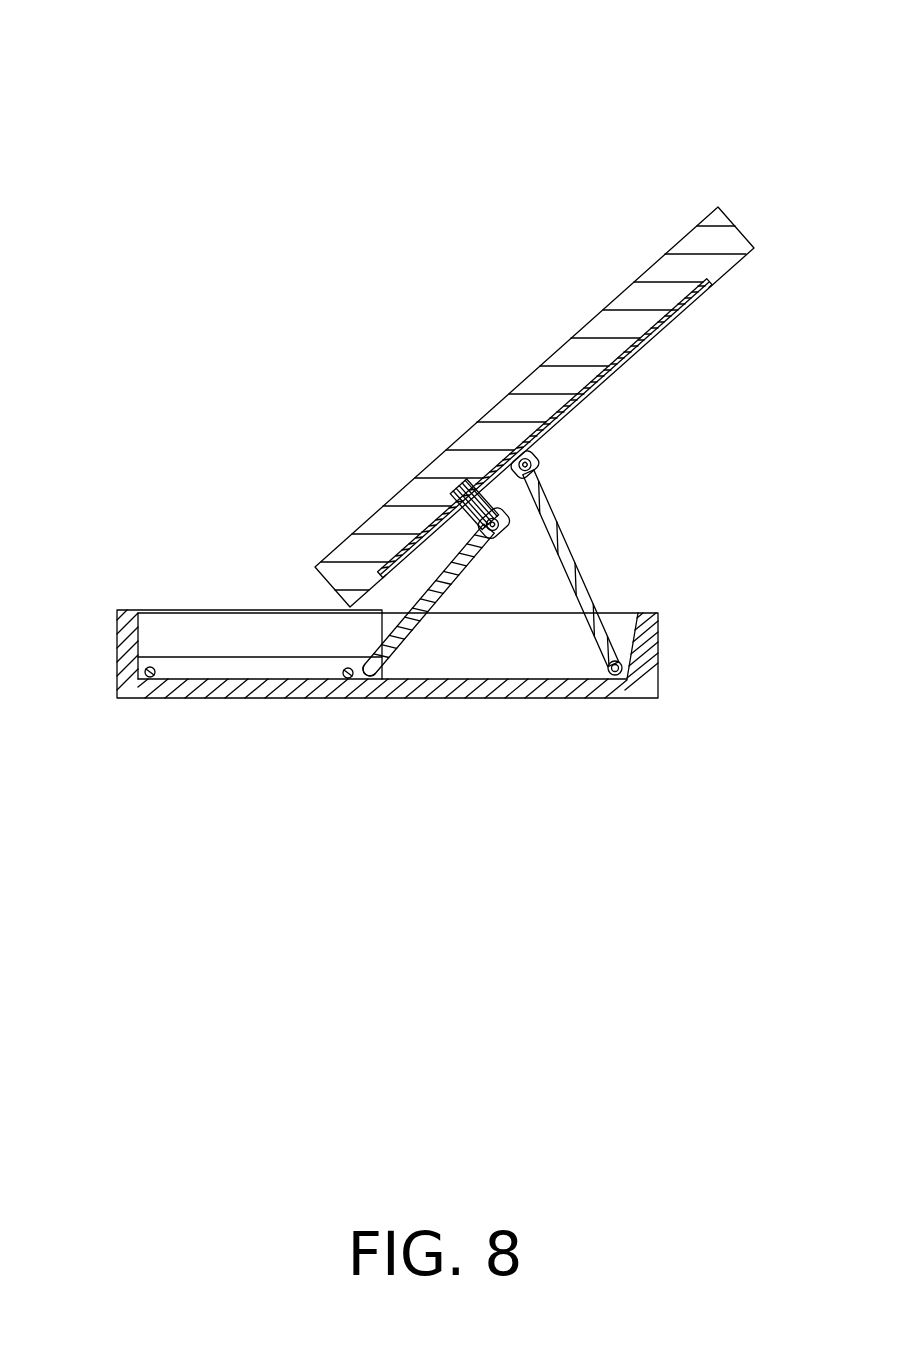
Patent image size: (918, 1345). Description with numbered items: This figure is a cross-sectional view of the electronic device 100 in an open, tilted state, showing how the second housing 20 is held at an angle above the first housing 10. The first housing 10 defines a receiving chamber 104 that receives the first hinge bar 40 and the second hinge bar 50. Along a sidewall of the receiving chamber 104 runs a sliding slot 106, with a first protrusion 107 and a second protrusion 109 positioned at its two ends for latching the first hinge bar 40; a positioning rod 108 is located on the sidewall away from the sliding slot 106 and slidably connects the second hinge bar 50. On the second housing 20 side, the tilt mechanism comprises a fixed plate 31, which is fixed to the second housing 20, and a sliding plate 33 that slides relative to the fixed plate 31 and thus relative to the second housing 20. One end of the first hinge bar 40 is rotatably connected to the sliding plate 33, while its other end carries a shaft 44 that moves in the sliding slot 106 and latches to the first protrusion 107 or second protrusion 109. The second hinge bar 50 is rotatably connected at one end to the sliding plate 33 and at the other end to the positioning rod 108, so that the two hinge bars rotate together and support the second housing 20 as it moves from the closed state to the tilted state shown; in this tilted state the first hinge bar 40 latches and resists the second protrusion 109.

The electronic device 100 is at (362, 47).
The first housing 10 is at (125, 647).
The second housing 20 is at (685, 267).
The fixed plate 31 is at (590, 370).
The sliding plate 33 is at (482, 492).
The first hinge bar 40 is at (418, 613).
The shaft 44 is at (386, 663).
The second hinge bar 50 is at (577, 577).
The receiving chamber 104 is at (523, 660).
The sliding slot 106 is at (238, 664).
The first protrusion 107 is at (151, 678).
The positioning rod 108 is at (622, 670).
The second protrusion 109 is at (347, 679).